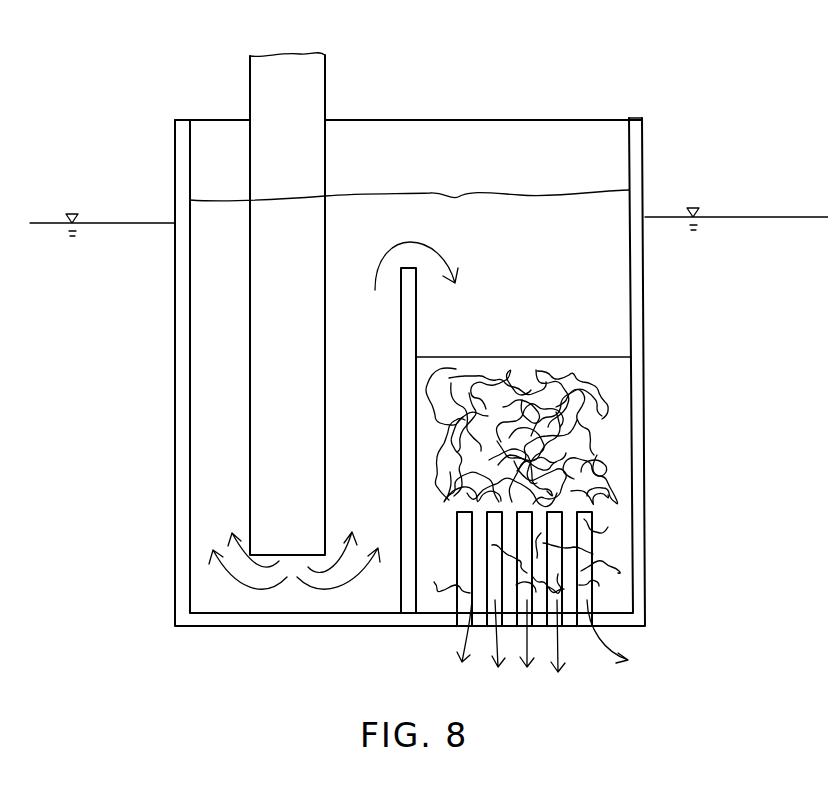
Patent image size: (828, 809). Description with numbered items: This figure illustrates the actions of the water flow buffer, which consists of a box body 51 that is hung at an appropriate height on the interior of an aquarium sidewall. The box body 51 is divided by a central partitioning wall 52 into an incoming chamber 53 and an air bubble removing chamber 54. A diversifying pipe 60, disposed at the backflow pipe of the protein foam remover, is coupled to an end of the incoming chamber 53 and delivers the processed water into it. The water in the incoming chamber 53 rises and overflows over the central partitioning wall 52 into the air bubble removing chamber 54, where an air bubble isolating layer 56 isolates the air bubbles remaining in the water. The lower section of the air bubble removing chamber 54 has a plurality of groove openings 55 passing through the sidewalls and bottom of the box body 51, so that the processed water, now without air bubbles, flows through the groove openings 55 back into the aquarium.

The box body 51 is at (635, 160).
The central partitioning wall 52 is at (410, 337).
The incoming chamber 53 is at (213, 463).
The air bubble removing chamber 54 is at (598, 337).
The groove openings 55 is at (587, 585).
The air bubble isolating layer 56 is at (613, 413).
The diversifying pipe 60 is at (300, 97).